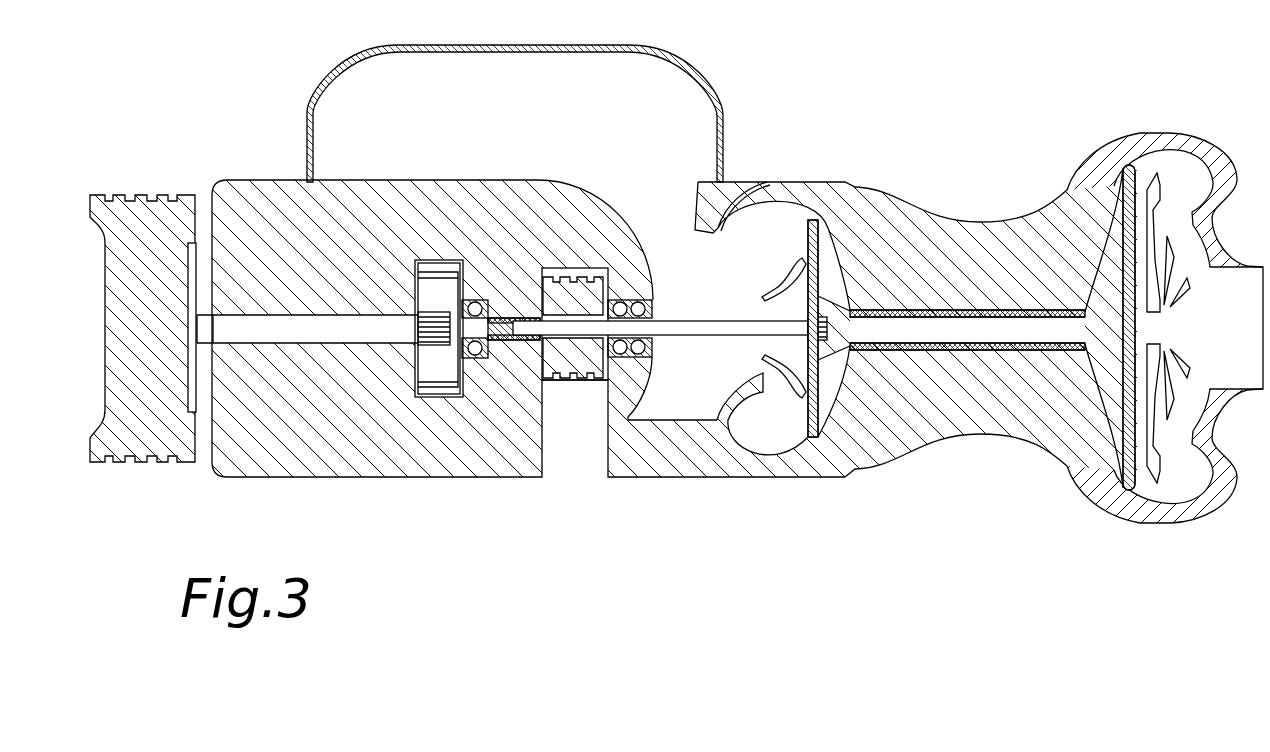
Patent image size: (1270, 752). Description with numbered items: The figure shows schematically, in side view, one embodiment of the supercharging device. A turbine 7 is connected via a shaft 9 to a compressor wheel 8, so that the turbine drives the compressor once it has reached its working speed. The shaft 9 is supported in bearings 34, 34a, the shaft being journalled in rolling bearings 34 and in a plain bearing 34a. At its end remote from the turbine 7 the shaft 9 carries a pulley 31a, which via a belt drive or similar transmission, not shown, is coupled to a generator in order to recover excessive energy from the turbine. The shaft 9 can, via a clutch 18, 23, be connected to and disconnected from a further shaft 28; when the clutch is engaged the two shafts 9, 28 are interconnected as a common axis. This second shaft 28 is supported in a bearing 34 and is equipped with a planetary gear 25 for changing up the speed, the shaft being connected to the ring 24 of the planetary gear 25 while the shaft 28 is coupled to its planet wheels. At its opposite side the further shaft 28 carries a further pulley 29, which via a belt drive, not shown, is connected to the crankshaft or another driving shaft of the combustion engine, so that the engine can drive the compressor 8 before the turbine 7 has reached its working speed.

The turbine 7 is at (1110, 300).
The compressor wheel 8 is at (820, 290).
The shaft 9 is at (912, 330).
The clutch 18 is at (515, 340).
The clutch 23 is at (508, 325).
The ring 24 is at (443, 265).
The planetary gear 25 is at (433, 298).
The further shaft 28 is at (318, 328).
The further pulley 29 is at (153, 225).
The pulley 31a is at (565, 358).
The bearings 34 is at (487, 300).
The plain bearing 34a is at (947, 312).